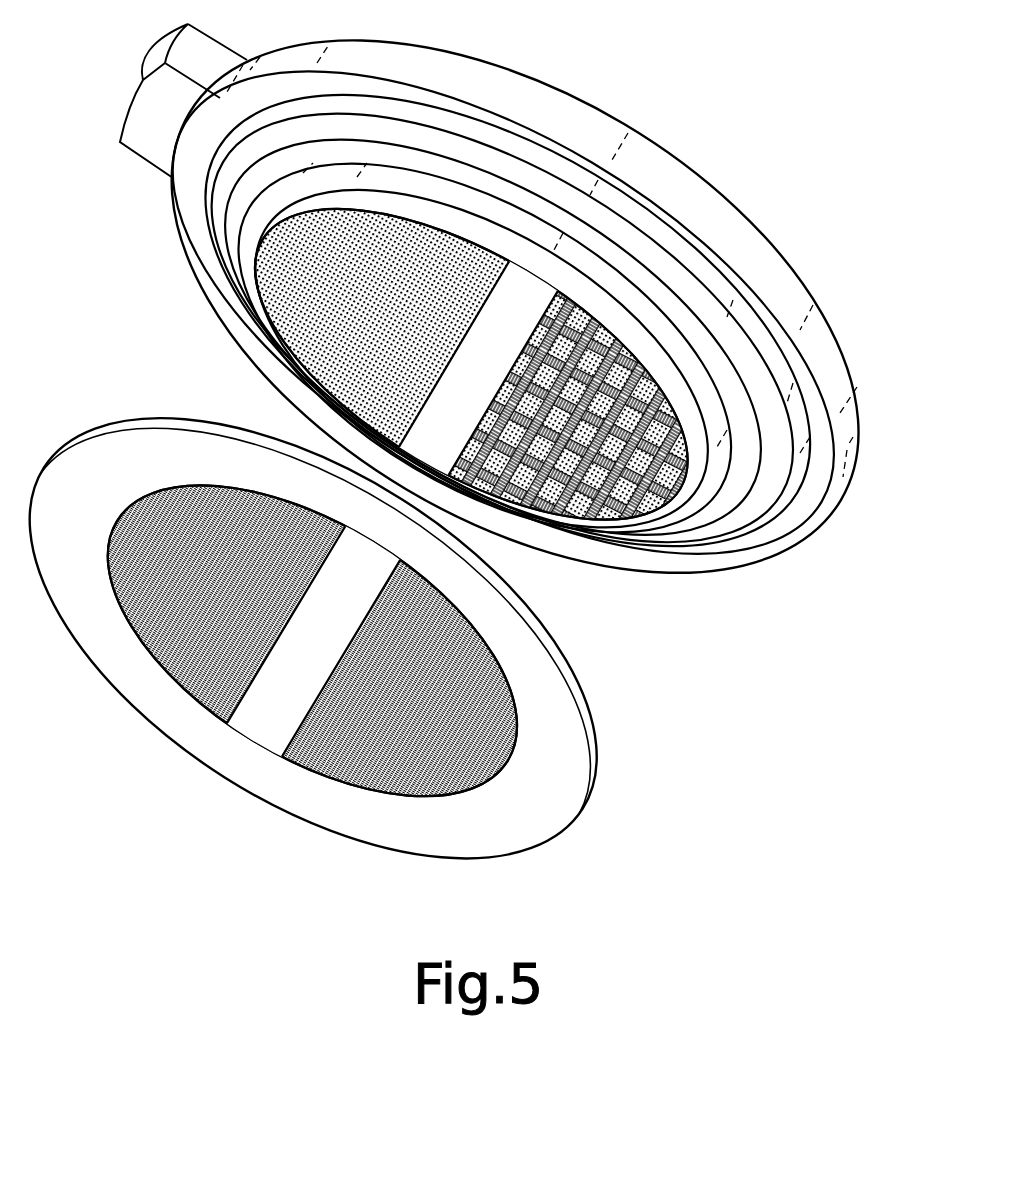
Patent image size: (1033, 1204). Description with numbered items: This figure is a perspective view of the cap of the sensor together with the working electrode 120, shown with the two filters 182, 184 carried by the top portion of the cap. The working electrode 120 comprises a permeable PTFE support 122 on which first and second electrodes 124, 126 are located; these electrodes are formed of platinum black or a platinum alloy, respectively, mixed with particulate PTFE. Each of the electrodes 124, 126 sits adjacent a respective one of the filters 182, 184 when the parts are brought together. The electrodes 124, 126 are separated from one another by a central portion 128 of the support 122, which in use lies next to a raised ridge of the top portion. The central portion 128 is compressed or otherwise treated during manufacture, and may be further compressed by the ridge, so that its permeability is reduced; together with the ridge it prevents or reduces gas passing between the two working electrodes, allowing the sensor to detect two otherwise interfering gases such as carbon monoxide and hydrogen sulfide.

The working electrode 120 is at (520, 380).
The permeable PTFE support 122 is at (335, 638).
The first electrode 124 is at (178, 635).
The second electrode 126 is at (348, 765).
The central portion 128 is at (273, 707).
The filter 182 is at (285, 332).
The filter 184 is at (620, 484).